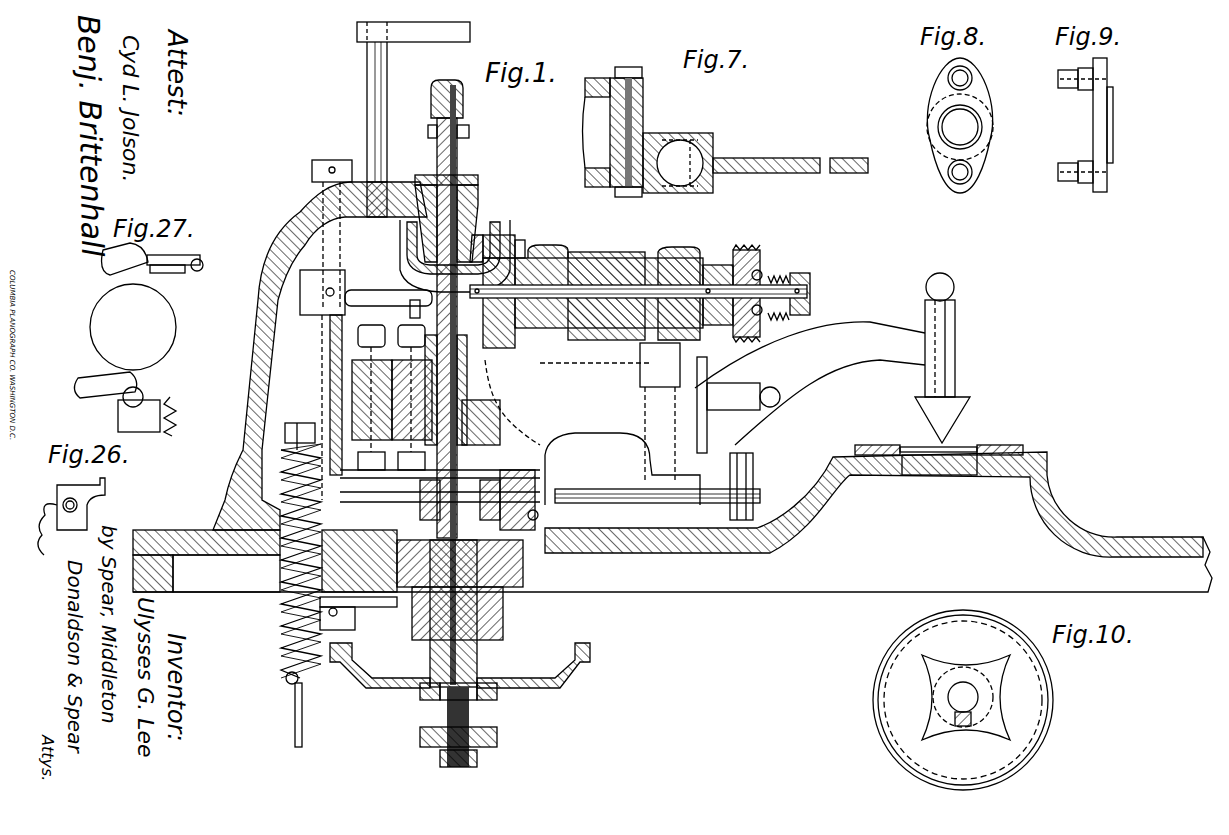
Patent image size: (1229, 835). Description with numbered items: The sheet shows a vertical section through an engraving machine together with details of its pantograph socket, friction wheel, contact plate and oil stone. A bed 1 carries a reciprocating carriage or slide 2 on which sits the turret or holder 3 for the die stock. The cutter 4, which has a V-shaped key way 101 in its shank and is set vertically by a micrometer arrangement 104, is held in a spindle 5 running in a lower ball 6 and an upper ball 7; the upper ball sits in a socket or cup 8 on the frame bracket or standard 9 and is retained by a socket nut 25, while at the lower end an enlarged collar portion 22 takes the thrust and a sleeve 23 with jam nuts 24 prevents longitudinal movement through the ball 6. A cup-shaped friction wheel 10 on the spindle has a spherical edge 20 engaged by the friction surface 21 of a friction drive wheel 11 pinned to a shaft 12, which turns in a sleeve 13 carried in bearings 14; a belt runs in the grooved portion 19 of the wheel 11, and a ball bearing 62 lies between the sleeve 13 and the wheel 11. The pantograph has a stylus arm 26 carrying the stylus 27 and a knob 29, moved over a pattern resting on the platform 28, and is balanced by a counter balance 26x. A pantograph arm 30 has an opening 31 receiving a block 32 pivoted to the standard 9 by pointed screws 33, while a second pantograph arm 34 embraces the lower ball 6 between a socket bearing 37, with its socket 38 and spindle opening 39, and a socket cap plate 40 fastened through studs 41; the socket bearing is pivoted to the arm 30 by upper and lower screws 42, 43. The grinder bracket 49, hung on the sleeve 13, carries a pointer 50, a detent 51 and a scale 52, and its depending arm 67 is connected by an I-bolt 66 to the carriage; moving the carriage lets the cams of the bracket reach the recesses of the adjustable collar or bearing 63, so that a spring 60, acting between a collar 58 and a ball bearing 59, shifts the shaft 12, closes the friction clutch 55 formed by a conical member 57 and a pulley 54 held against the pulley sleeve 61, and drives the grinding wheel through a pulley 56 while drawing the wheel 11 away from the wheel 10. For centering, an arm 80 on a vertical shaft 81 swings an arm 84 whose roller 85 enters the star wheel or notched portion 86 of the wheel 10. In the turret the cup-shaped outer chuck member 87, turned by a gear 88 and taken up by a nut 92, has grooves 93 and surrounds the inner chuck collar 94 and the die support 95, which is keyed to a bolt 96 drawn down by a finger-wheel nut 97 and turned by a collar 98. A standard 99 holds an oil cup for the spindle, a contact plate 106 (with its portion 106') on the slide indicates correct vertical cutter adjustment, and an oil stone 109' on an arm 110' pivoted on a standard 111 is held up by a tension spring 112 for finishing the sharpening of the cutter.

In FIG. 1, the bed 1 is at (820, 510).
In FIG. 1, the carriage or slide 2 is at (282, 562).
In FIG. 1, the turret or holder 3 is at (523, 592).
In FIG. 27, the turret or holder 3 is at (176, 333).
In FIG. 1, the cutter 4 is at (440, 488).
In FIG. 1, the spindle 5 is at (455, 328).
In FIG. 1, the lower ball bearing 6 is at (500, 412).
In FIG. 1, the upper ball bearing 7 is at (480, 218).
In FIG. 1, the socket or cup 8 is at (406, 248).
In FIG. 1, the frame bracket 9 is at (282, 222).
In FIG. 1, the friction wheel 10 is at (412, 258).
In FIG. 10, the friction wheel 10 is at (900, 717).
In FIG. 1, the friction drive wheel 11 is at (505, 236).
In FIG. 1, the shaft 12 is at (638, 293).
In FIG. 1, the sleeve 13 is at (548, 240).
In FIG. 1, the bearings 14 is at (609, 282).
In FIG. 1, the grooved portion 19 is at (525, 239).
In FIG. 1, the spherically shaped edge 20 is at (400, 230).
In FIG. 10, the spherically shaped edge 20 is at (885, 660).
In FIG. 1, the friction surface 21 is at (462, 352).
In FIG. 1, the enlarged collar portion 22 is at (500, 445).
In FIG. 1, the sleeve 23 is at (480, 410).
In FIG. 1, the jam nuts 24 is at (420, 342).
In FIG. 1, the socket nut 25 is at (472, 182).
In FIG. 1, the stylus arm 26 is at (810, 383).
In FIG. 1, the counter balance 26x is at (280, 640).
In FIG. 1, the stylus 27 is at (950, 416).
In FIG. 1, the platform 28 is at (860, 448).
In FIG. 1, the knob or finger piece 29 is at (955, 287).
In FIG. 1, the pantograph arm 30 is at (330, 382).
In FIG. 7, the pantograph arm 30 is at (592, 128).
In FIG. 1, the opening 31 is at (352, 400).
In FIG. 1, the block 32 is at (360, 406).
In FIG. 1, the pointed screws 33 is at (275, 460).
In FIG. 7, the second pantograph arm 34 is at (790, 173).
In FIG. 7, the socket bearing 37 is at (645, 112).
In FIG. 7, the socket 38 is at (714, 148).
In FIG. 7, the opening 39 is at (688, 138).
In FIG. 7, the socket cap plate 40 is at (706, 193).
In FIG. 8, the socket cap plate 40 is at (972, 85).
In FIG. 9, the socket cap plate 40 is at (1110, 70).
In FIG. 7, the studs 41 is at (672, 193).
In FIG. 8, the studs 41 is at (972, 176).
In FIG. 9, the studs 41 is at (1085, 183).
In FIG. 7, the upper screw 42 is at (628, 67).
In FIG. 7, the lower screw 43 is at (618, 192).
In FIG. 1, the grinder bracket 49 is at (582, 411).
In FIG. 1, the pointer 50 is at (712, 385).
In FIG. 1, the detent 51 is at (745, 410).
In FIG. 1, the scale 52 is at (706, 365).
In FIG. 1, the pulley 54 is at (760, 262).
In FIG. 1, the friction clutch 55 is at (722, 264).
In FIG. 1, the pulley 56 is at (754, 465).
In FIG. 1, the conical member 57 is at (712, 262).
In FIG. 1, the collar 58 is at (810, 278).
In FIG. 1, the ball bearing 59 is at (778, 274).
In FIG. 1, the spring 60 is at (782, 308).
In FIG. 1, the pulley sleeve 61 is at (745, 248).
In FIG. 1, the ball bearing 62 is at (512, 330).
In FIG. 1, the collar or adjustable bearing 63 is at (652, 252).
In FIG. 1, the link or I-bolt 66 is at (540, 512).
In FIG. 1, the depending arm 67 is at (565, 486).
In FIG. 1, the arm 80 is at (378, 607).
In FIG. 1, the vertical shaft 81 is at (330, 328).
In FIG. 1, the arm 84 is at (388, 297).
In FIG. 1, the roller 85 is at (410, 310).
In FIG. 1, the star wheel or notched portion 86 is at (432, 285).
In FIG. 10, the star wheel or notched portion 86 is at (960, 730).
In FIG. 1, the outer chuck member 87 is at (505, 485).
In FIG. 1, the gear 88 is at (590, 656).
In FIG. 1, the nut 92 is at (498, 695).
In FIG. 1, the grooves 93 is at (400, 474).
In FIG. 1, the inner chuck member 94 is at (400, 490).
In FIG. 1, the die support 95 is at (531, 627).
In FIG. 1, the bolt 96 is at (455, 655).
In FIG. 1, the nut or finger wheel 97 is at (498, 738).
In FIG. 1, the collar 98 is at (478, 760).
In FIG. 1, the standard 99 is at (366, 106).
In FIG. 1, the V-shaped key way 101 is at (460, 104).
In FIG. 1, the micrometer arrangement 104 is at (460, 145).
In FIG. 1, the contact plate 106 is at (269, 477).
In FIG. 26, the contact plate 106 is at (90, 516).
In FIG. 26, the lug 106' is at (132, 472).
In FIG. 1, the oil stone 109' is at (484, 486).
In FIG. 27, the oil stone 109' is at (100, 320).
In FIG. 27, the arm 110' is at (146, 348).
In FIG. 27, the standard 111 is at (185, 256).
In FIG. 1, the tension spring 112 is at (657, 488).
In FIG. 27, the tension spring 112 is at (203, 266).